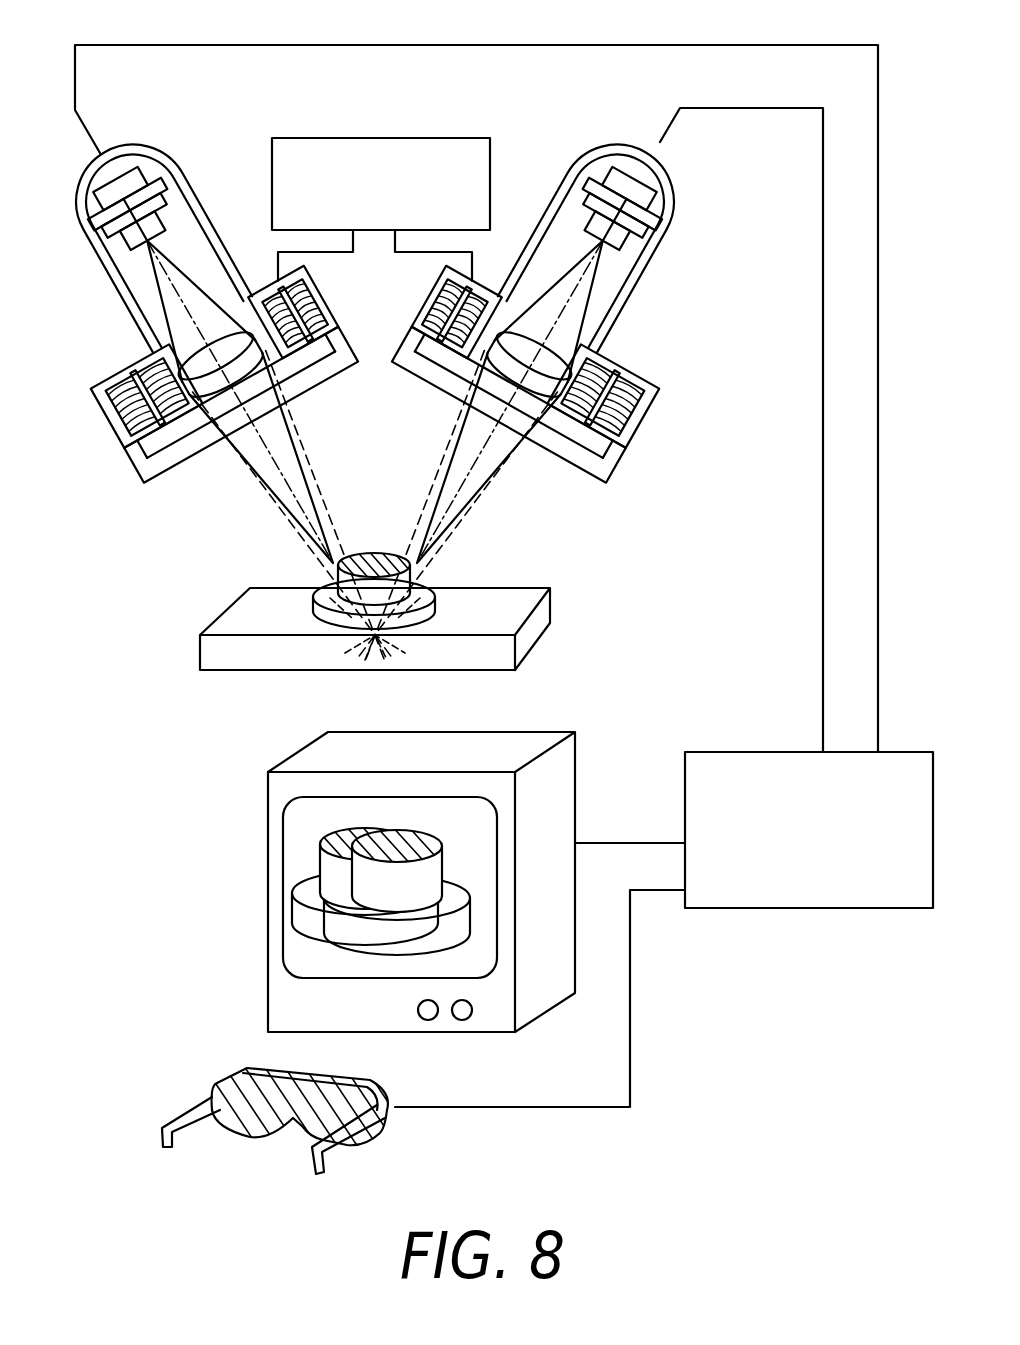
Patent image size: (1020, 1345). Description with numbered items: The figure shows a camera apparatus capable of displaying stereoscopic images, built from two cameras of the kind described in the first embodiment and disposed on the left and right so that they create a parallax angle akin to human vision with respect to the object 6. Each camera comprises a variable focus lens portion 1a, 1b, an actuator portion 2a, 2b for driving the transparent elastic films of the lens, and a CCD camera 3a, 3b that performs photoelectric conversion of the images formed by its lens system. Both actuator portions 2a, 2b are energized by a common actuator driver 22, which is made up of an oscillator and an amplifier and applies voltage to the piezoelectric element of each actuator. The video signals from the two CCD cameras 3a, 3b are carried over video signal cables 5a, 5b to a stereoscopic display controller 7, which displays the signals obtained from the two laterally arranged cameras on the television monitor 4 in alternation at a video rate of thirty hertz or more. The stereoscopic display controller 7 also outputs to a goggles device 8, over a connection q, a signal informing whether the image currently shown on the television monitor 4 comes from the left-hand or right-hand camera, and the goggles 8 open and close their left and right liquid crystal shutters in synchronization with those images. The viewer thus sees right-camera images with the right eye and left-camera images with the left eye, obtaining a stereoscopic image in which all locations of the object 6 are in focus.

The variable focus lens portion 1a is at (617, 460).
The variable focus lens portion 1b is at (133, 465).
The actuator portion 2a is at (659, 388).
The actuator portion 2b is at (93, 388).
The CCD camera 3a is at (598, 140).
The CCD camera 3b is at (163, 153).
The television monitor 4 is at (543, 732).
The video signal cable 5a is at (750, 108).
The video signal cable 5b is at (312, 47).
The object 6 is at (438, 583).
The stereoscopic display controller 7 is at (740, 752).
The goggles device 8 is at (228, 1081).
The actuator driver 22 is at (418, 138).
The signal line q is at (572, 1108).